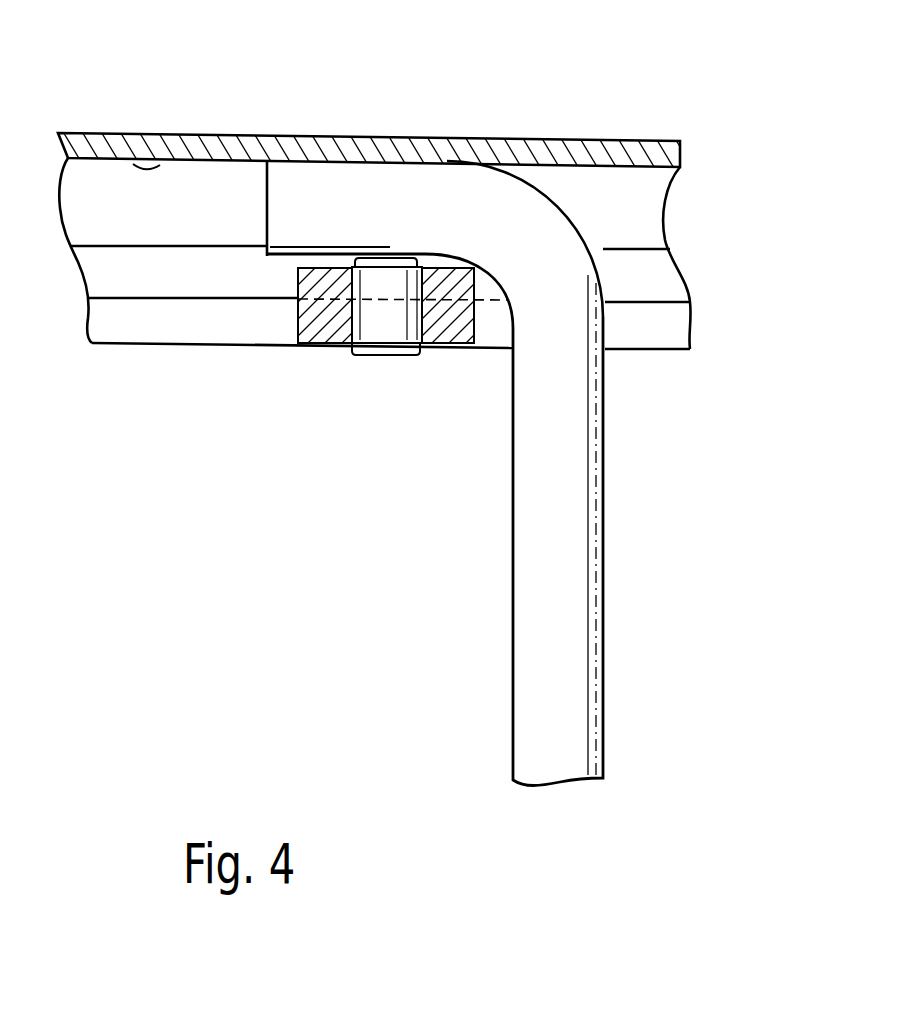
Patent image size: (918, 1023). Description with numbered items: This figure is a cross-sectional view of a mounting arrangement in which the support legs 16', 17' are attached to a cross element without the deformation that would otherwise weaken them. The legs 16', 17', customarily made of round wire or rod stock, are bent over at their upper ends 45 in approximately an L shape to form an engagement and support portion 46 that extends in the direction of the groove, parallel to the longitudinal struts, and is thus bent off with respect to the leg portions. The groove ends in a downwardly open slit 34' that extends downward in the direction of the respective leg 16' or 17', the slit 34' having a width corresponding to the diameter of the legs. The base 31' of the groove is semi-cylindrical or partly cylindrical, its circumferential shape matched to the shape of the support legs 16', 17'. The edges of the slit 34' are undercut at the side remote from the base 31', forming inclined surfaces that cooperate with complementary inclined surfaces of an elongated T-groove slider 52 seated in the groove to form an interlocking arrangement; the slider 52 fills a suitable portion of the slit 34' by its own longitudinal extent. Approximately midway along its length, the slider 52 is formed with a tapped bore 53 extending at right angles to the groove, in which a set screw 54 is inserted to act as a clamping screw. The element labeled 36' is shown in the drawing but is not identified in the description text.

The base of the groove 31' is at (378, 93).
The slit 34' is at (286, 325).
The right body portion 36' is at (703, 258).
The upper ends of the support legs 45 is at (512, 232).
The engagement and support portion 46 is at (303, 192).
The T-groove slider 52 is at (302, 344).
The tapped bore 53 is at (437, 345).
The set screw 54 is at (368, 358).
The support leg 16' is at (451, 415).
The support leg 17' is at (451, 415).